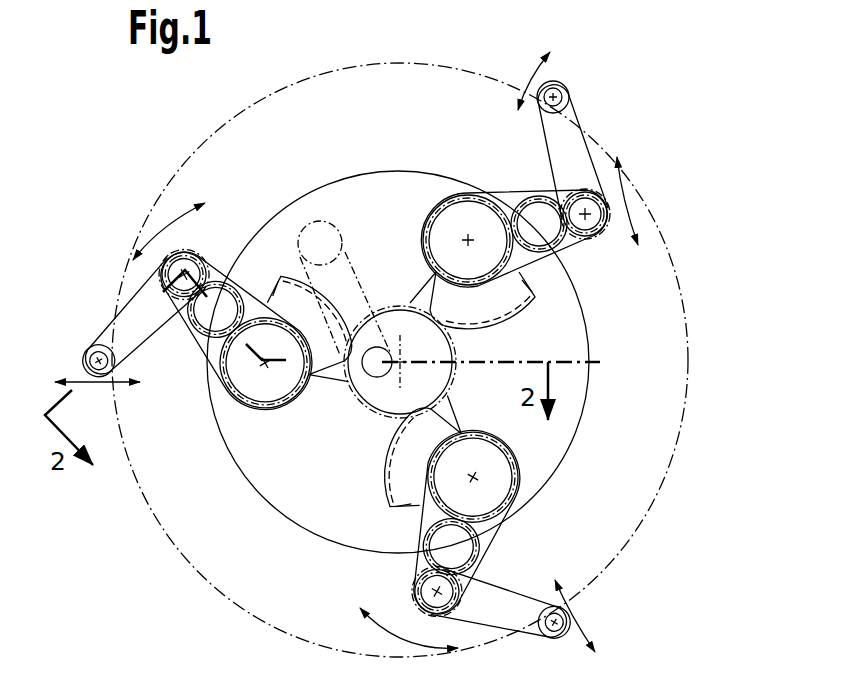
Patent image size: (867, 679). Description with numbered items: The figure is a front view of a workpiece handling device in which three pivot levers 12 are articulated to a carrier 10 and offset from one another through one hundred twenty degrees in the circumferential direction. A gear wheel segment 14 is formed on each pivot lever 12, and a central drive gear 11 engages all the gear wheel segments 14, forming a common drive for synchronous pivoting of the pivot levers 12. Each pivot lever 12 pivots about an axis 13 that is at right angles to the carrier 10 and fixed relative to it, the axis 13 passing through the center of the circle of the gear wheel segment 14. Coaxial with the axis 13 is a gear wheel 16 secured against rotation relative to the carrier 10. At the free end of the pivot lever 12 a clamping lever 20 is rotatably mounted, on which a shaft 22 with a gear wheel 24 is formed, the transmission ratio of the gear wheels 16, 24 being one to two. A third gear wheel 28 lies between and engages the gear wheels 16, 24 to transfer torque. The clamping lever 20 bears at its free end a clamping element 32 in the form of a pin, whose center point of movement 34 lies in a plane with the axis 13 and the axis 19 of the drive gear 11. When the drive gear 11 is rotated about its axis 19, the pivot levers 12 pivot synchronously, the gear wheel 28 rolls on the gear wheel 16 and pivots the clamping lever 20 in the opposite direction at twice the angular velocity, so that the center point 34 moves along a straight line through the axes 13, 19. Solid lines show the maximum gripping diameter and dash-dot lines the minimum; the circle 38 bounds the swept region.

The carrier 10 is at (580, 386).
The central drive gear 11 is at (572, 358).
The pivot lever 12 is at (431, 193).
The axis 13 is at (468, 240).
The gear wheel segment 14 is at (540, 291).
The gear wheel 16 is at (500, 198).
The axis of the drive gear wheel 19 is at (392, 357).
The clamping lever 20 is at (596, 160).
The shaft 22 is at (588, 213).
The gear wheel 24 is at (612, 222).
The third gear wheel 28 is at (522, 196).
The clamping element 32 is at (559, 84).
The center point of movement 34 is at (565, 100).
The outer circle of travel 38 is at (687, 310).